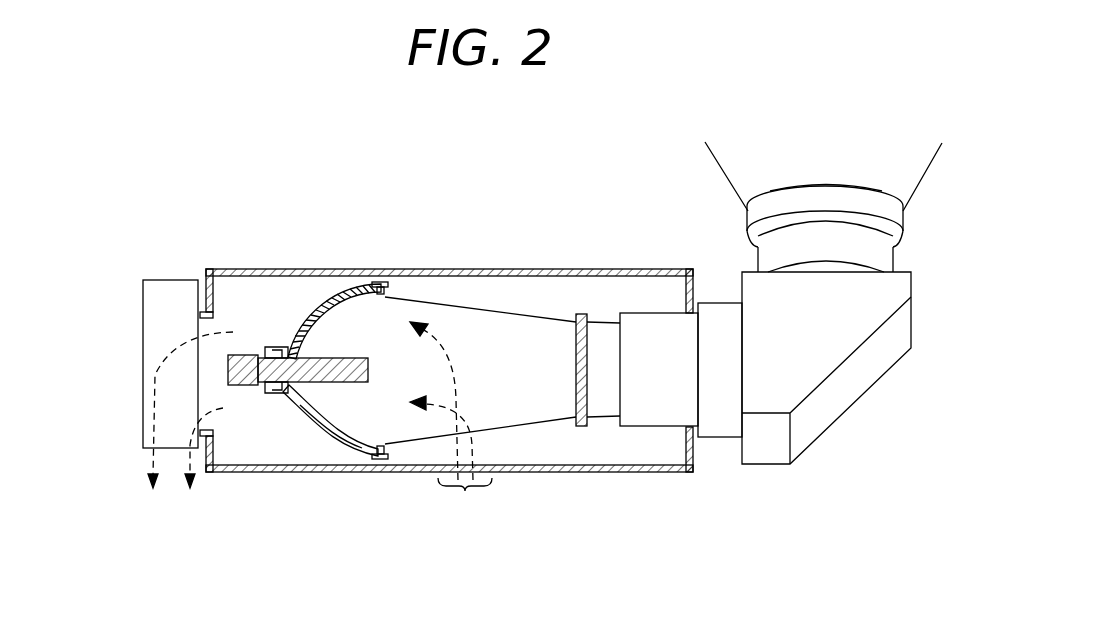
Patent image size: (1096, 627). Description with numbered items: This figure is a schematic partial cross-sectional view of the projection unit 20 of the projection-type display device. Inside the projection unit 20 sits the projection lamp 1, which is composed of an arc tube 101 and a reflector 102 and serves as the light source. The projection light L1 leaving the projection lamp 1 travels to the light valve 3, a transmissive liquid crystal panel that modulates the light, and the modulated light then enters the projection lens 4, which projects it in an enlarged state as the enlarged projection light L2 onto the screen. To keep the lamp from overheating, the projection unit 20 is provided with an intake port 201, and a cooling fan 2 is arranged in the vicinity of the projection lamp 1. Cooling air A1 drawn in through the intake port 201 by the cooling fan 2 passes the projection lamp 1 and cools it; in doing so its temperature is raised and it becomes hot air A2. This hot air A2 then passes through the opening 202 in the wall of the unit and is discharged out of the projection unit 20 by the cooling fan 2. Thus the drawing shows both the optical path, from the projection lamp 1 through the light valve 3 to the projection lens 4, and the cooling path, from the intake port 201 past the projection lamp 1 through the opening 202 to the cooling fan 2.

The projection lamp 1 is at (298, 442).
The arc tube 101 is at (242, 388).
The reflector 102 is at (312, 428).
The cooling fan 2 is at (142, 308).
The projection unit 20 is at (655, 482).
The intake port 201 is at (465, 500).
The opening 202 is at (203, 323).
The light valve 3 is at (580, 426).
The projection lens 4 is at (748, 247).
The cooling air A1 is at (455, 365).
The hot air A2 is at (152, 427).
The projection light L1 is at (530, 423).
The enlarged projection light L2 is at (712, 150).